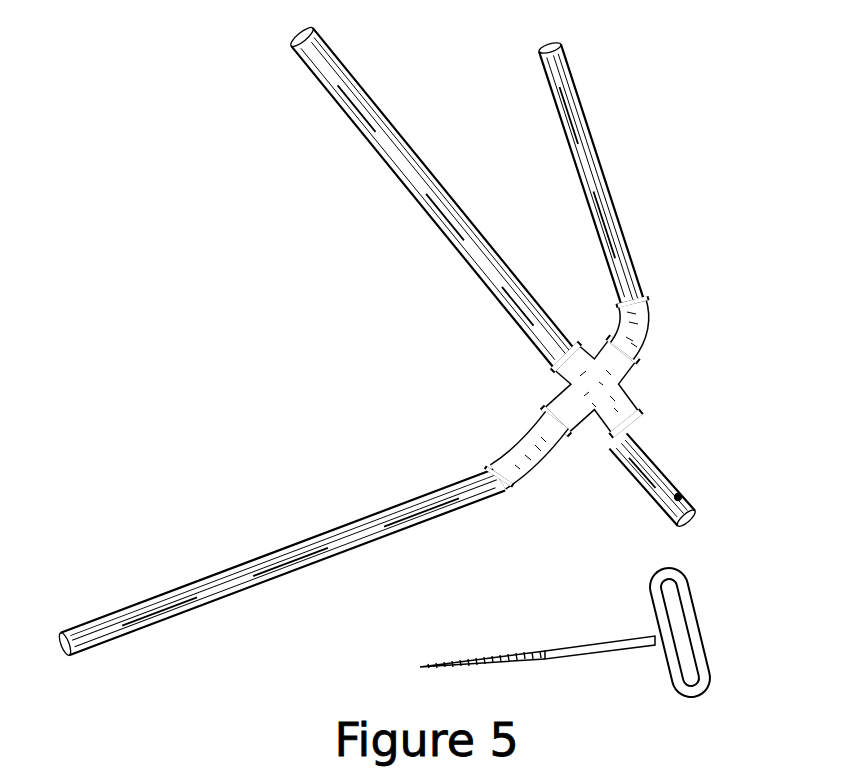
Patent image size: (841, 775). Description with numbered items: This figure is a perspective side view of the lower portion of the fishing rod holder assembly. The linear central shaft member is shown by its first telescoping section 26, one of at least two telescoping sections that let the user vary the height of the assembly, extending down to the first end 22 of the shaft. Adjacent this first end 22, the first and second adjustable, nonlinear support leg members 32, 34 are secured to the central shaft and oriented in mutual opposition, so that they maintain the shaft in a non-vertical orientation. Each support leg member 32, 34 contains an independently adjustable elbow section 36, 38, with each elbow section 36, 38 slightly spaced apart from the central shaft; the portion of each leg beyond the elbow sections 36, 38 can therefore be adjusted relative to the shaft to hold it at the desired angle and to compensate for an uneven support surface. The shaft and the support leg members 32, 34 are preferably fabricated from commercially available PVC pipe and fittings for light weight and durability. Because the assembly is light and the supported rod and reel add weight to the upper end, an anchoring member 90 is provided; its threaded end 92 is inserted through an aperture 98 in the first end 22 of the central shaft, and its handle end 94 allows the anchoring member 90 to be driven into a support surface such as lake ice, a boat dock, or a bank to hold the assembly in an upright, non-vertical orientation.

The first end of shaft member 22 is at (646, 468).
The first telescoping section 26 is at (375, 133).
The first support leg member 32 is at (560, 70).
The second support leg member 34 is at (275, 565).
The elbow joint of support leg member 36 is at (644, 328).
The elbow joint of support leg member 38 is at (534, 448).
The anchoring member 90 is at (528, 658).
The threaded end of anchoring member 92 is at (452, 660).
The handle end of anchoring member 94 is at (667, 664).
The aperture in first end of central shaft member 98 is at (683, 492).